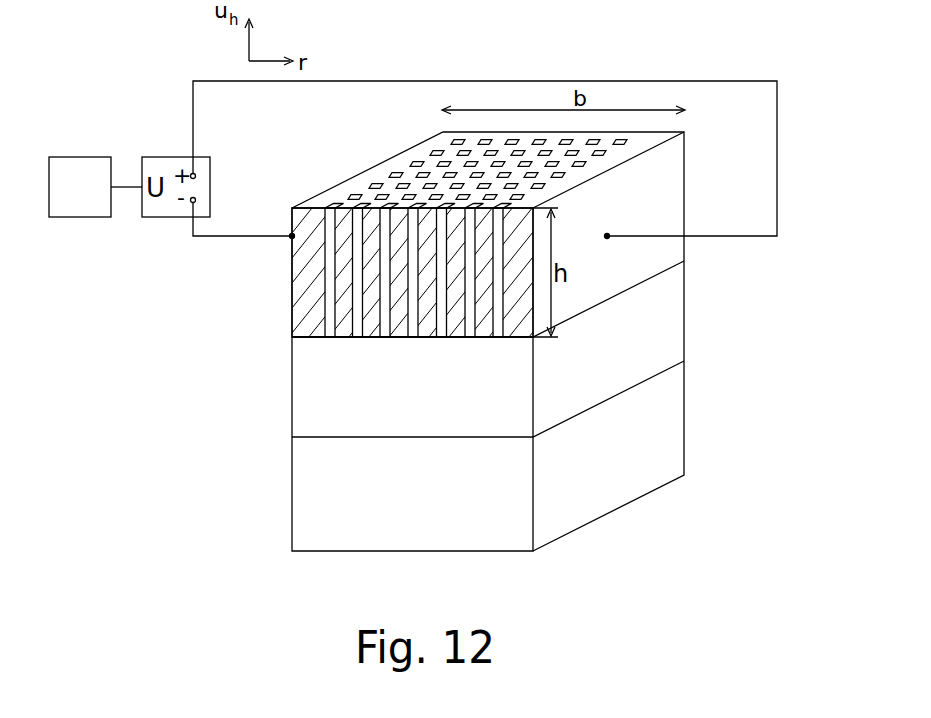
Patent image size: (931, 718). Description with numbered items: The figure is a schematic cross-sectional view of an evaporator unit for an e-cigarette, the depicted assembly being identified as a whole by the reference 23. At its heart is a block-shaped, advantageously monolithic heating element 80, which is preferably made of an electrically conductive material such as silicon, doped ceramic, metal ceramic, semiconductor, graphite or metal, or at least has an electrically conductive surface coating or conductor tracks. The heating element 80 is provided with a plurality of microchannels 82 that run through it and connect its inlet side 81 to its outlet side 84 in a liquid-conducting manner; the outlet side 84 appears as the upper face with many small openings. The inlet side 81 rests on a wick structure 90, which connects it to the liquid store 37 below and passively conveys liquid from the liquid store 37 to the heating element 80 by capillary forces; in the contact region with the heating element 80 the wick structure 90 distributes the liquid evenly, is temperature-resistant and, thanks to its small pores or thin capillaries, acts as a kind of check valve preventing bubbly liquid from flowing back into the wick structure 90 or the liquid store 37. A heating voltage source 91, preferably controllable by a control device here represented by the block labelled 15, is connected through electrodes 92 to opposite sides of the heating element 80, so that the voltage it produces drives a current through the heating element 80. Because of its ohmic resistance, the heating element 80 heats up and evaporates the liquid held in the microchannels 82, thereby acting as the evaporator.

The electrical resistance heating element 15 is at (63, 200).
The element 23 is at (704, 306).
The liquid store 37 is at (387, 516).
The heating element 80 is at (292, 255).
The inlet side 81 is at (452, 340).
The microchannels 82 is at (385, 292).
The outlet side 84 is at (403, 160).
The wick structure 90 is at (387, 401).
The heating voltage source 91 is at (212, 187).
The electrodes 92 is at (608, 234).